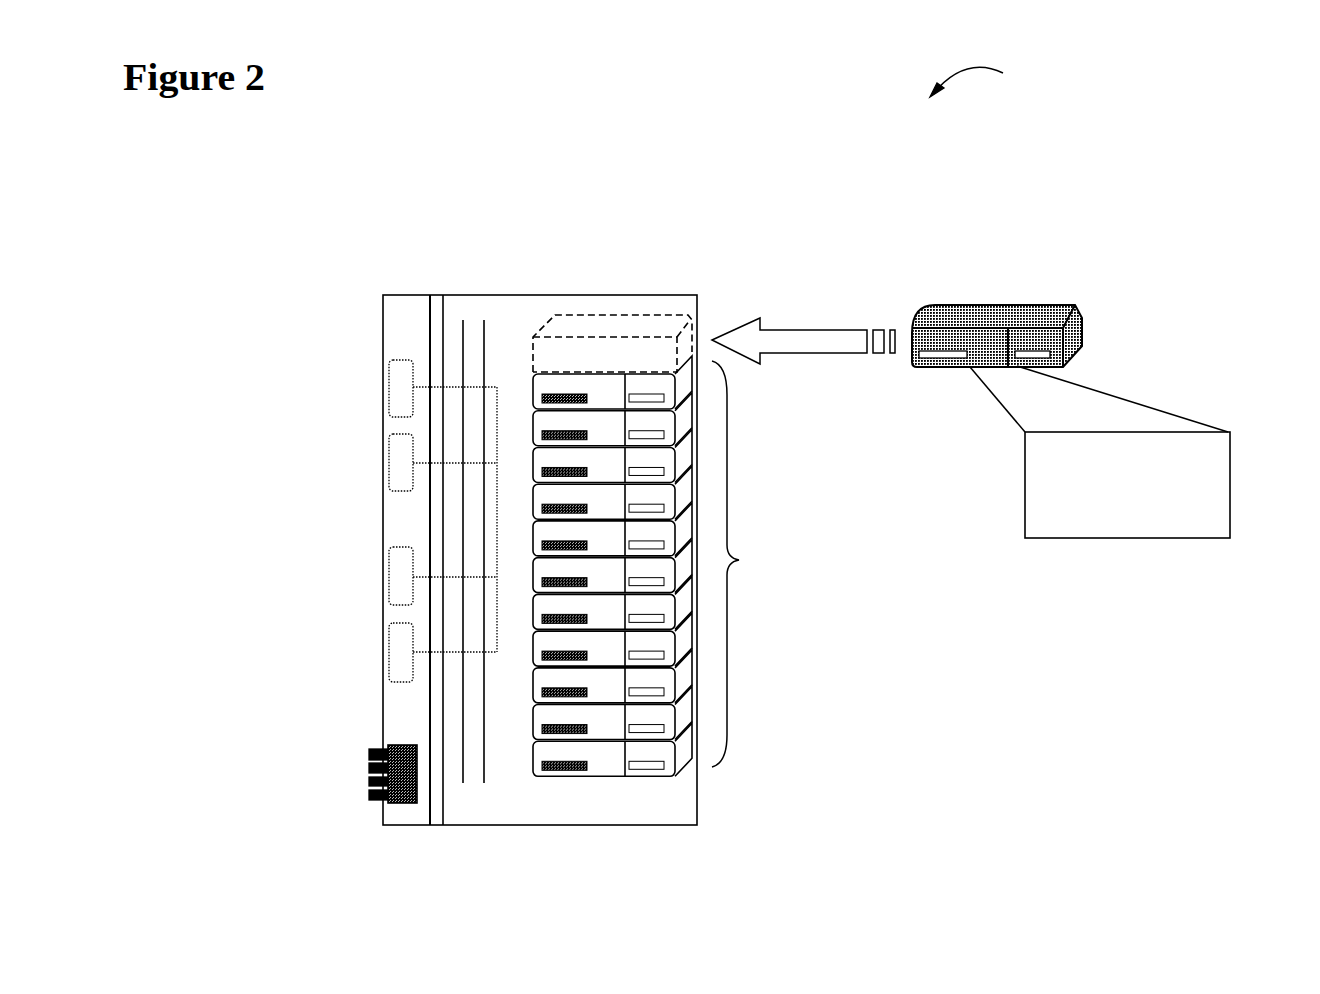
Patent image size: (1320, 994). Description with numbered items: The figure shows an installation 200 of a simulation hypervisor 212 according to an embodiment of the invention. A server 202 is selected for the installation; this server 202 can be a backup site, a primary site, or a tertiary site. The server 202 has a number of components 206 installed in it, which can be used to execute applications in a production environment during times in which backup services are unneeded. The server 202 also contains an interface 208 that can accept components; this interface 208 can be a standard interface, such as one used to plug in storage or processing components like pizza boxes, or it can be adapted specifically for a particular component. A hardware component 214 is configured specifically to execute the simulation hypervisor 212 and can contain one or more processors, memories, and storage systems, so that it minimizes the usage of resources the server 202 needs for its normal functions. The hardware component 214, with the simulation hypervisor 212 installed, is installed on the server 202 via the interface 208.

The installation 200 is at (996, 82).
The server 202 is at (487, 295).
The components 206 is at (664, 566).
The interface 208 is at (588, 328).
The simulation hypervisor 212 is at (1100, 452).
The hardware component 214 is at (1048, 305).